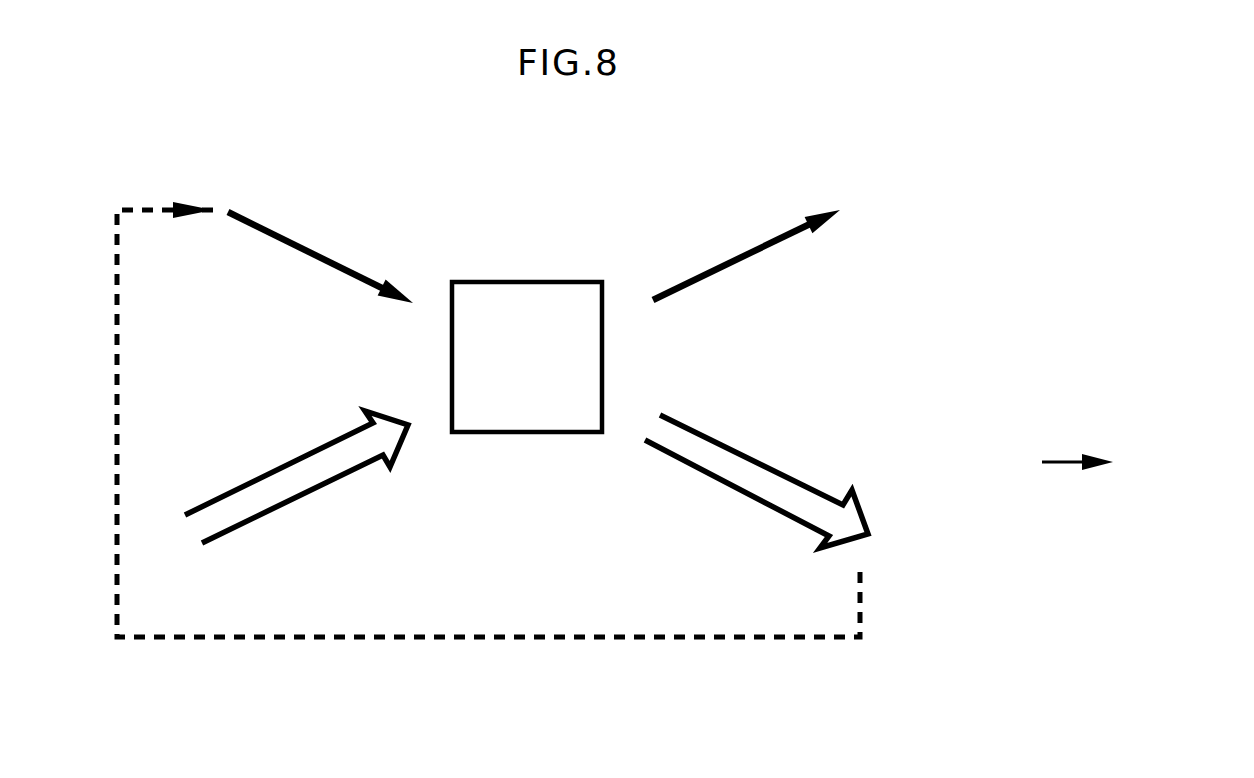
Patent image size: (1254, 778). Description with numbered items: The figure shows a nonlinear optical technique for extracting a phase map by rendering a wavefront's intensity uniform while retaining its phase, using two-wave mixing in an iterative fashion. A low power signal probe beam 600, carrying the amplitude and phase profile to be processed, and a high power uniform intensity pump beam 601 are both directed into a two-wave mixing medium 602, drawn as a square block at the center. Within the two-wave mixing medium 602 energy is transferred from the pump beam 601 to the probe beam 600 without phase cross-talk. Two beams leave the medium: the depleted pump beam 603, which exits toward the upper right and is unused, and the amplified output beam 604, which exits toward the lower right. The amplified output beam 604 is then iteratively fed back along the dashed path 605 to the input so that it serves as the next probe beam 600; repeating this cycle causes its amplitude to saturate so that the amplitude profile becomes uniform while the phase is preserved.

The probe beam 600 is at (330, 267).
The pump beam 601 is at (310, 488).
The two-wave mixing medium 602 is at (517, 282).
The depleted pump beam 603 is at (723, 270).
The amplified output beam 604 is at (737, 488).
The feedback path 605 is at (420, 637).